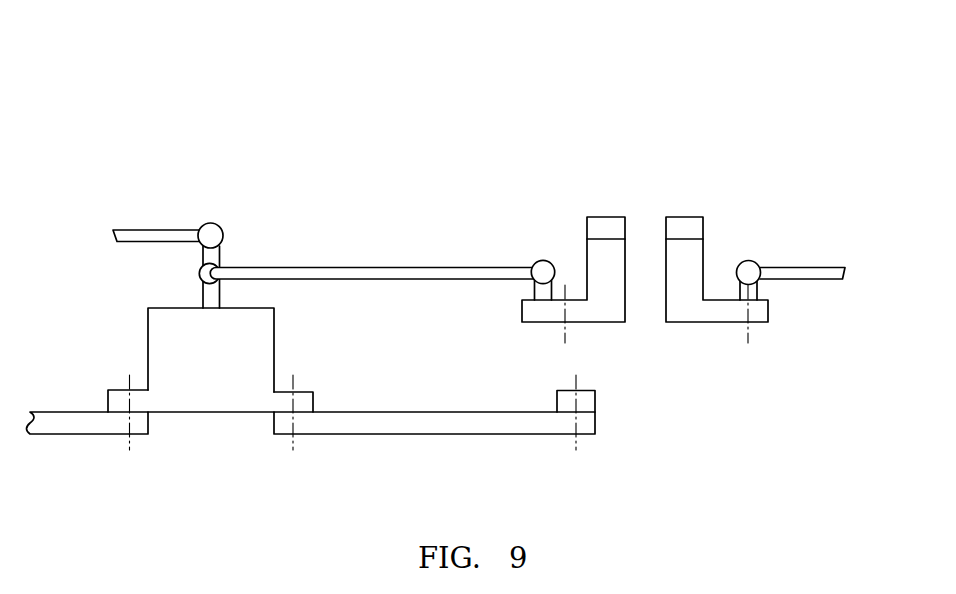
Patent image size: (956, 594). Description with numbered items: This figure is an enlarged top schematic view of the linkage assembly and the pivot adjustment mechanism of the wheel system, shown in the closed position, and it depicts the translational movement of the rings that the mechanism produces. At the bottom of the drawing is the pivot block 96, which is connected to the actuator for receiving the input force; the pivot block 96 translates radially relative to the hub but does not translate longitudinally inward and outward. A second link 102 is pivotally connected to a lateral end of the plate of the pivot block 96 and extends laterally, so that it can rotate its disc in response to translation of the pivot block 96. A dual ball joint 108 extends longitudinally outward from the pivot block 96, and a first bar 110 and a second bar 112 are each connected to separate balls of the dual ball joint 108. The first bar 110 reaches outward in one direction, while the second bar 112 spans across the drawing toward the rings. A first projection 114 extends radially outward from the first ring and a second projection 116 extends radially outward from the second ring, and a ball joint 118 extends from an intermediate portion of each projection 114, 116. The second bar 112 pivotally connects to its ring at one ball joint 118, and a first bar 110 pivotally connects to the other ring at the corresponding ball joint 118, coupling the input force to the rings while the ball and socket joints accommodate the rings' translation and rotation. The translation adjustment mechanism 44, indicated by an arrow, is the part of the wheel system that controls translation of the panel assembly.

The translation adjustment mechanism 44 is at (708, 360).
The pivot block 96 is at (226, 372).
The second link 102 is at (454, 436).
The dual ball joint 108 is at (225, 236).
The first bar 110 is at (165, 226).
The second bar 112 is at (413, 265).
The first projection 114 is at (697, 215).
The second projection 116 is at (612, 215).
The ball joint 118 is at (532, 287).